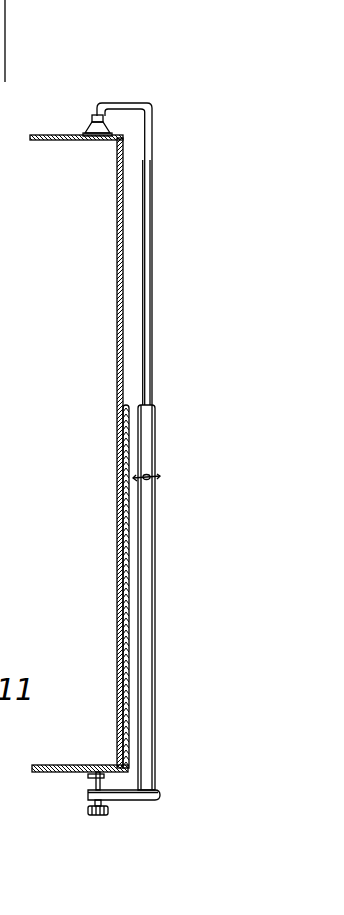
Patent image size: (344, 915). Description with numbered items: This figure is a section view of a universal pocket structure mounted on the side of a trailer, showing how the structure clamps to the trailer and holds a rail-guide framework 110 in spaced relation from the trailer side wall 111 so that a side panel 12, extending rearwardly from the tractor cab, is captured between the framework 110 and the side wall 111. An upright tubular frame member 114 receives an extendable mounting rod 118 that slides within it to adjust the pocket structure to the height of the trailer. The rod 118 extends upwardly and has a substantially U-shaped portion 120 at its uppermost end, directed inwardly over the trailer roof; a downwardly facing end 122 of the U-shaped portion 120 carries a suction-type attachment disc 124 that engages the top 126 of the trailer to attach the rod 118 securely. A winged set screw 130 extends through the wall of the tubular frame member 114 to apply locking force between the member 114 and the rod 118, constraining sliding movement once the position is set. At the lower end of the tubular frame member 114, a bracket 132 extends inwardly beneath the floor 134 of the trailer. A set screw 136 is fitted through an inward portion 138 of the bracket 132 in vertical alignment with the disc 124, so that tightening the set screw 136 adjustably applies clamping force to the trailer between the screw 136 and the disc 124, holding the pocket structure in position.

The rail-guide framework 110 is at (5, 23).
The trailer side wall 111 is at (117, 338).
The side panel 12 is at (118, 545).
The tubular frame member 114 is at (145, 607).
The mounting rod 118 is at (142, 249).
The U-shaped portion 120 is at (130, 103).
The downwardly facing end 122 is at (90, 114).
The suction-type attachment disc 124 is at (86, 130).
The top of the trailer 126 is at (48, 140).
The winged set screw 130 is at (140, 477).
The bracket 132 is at (125, 800).
The floor of the trailer 134 is at (60, 766).
The set screw 136 is at (88, 810).
The inward portion 138 is at (90, 793).